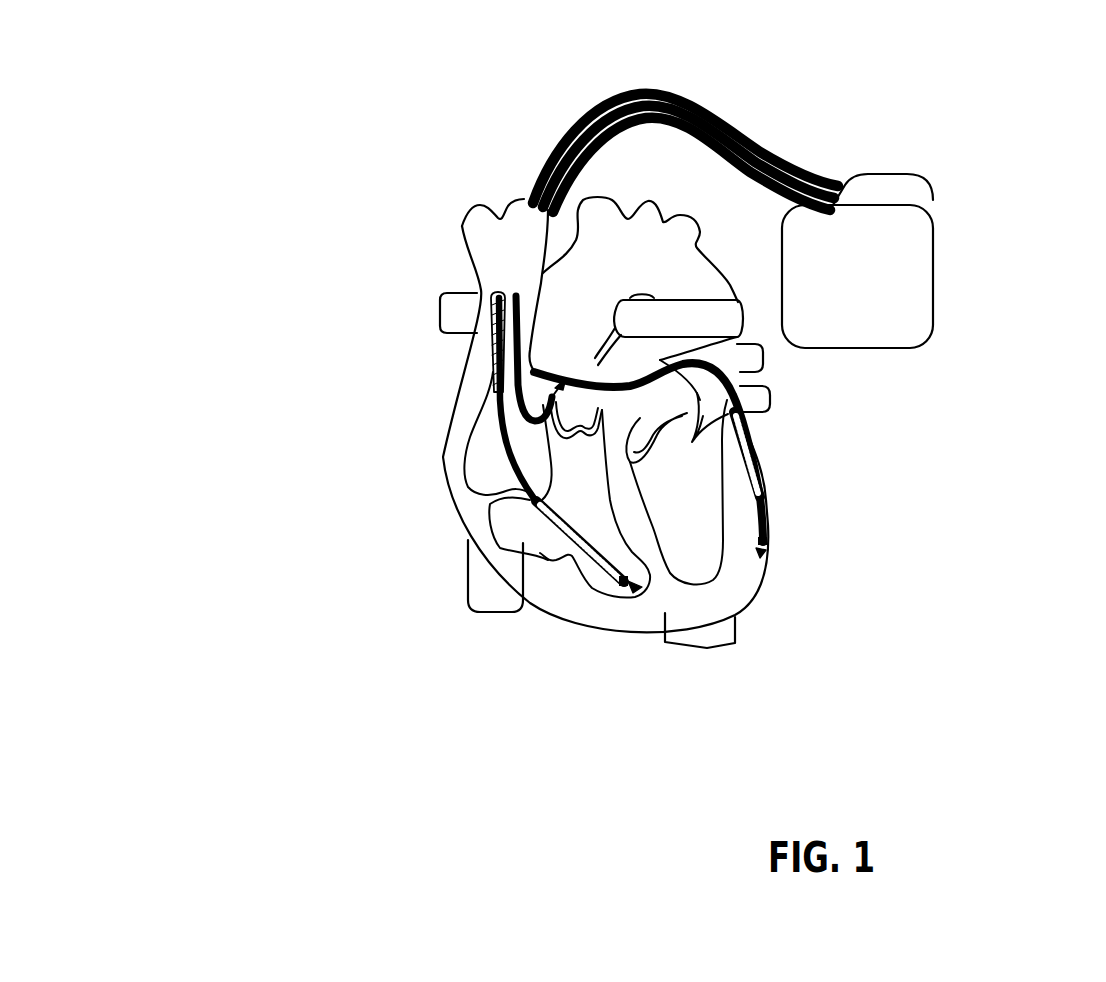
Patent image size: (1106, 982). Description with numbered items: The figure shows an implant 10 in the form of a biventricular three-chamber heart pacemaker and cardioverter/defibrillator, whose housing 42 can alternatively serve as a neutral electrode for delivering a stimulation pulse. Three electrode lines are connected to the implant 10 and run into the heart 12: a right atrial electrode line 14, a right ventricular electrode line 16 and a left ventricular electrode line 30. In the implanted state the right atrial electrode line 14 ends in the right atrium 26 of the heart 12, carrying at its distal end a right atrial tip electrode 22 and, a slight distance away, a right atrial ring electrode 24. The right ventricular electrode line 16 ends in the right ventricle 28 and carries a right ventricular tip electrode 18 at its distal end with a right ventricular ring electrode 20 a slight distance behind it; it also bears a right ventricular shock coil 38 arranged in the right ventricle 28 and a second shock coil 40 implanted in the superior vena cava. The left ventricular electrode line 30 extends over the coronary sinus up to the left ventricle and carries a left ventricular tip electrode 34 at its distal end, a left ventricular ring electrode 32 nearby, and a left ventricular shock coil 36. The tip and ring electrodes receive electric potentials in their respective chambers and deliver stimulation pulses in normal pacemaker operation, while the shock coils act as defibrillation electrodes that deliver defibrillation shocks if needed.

The implant 10 is at (944, 331).
The heart 12 is at (605, 422).
The right atrial electrode line 14 is at (603, 97).
The right ventricular electrode line 16 is at (552, 140).
The right ventricular tip electrode 18 is at (638, 592).
The right ventricular ring electrode 20 is at (622, 585).
The right atrial tip electrode 22 is at (550, 399).
The right atrial ring electrode 24 is at (547, 405).
The right atrium 26 is at (482, 456).
The right ventricle 28 is at (548, 543).
The left ventricular electrode line 30 is at (755, 188).
The left ventricular ring electrode 32 is at (767, 542).
The left ventricular tip electrode 34 is at (762, 553).
The left ventricular shock coil 36 is at (762, 481).
The right ventricular shock coil 38 is at (547, 518).
The second shock coil 40 is at (490, 352).
The housing 42 is at (883, 322).